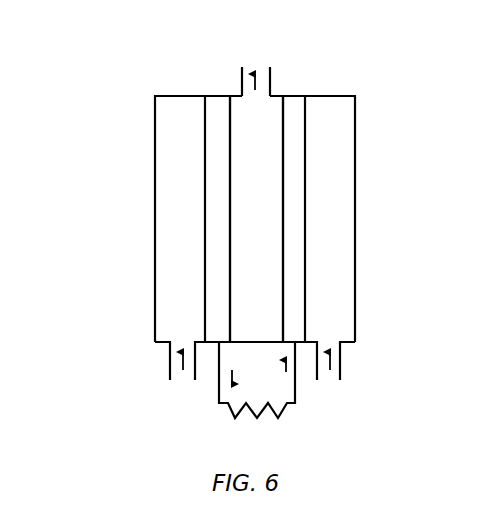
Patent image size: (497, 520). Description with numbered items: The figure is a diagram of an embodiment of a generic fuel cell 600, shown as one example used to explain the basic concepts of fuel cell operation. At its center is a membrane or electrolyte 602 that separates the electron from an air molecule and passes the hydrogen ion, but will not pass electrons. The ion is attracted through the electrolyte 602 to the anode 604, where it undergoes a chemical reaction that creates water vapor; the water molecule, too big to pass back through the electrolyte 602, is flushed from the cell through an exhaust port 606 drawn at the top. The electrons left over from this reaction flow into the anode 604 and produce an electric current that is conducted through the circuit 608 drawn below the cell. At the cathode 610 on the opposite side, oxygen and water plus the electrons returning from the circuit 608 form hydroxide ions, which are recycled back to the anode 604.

The fuel cell 600 is at (98, 61).
The electrolyte 602 is at (256, 219).
The anode 604 is at (215, 95).
The exhaust port 606 is at (272, 58).
The circuit 608 is at (217, 400).
The cathode 610 is at (290, 93).